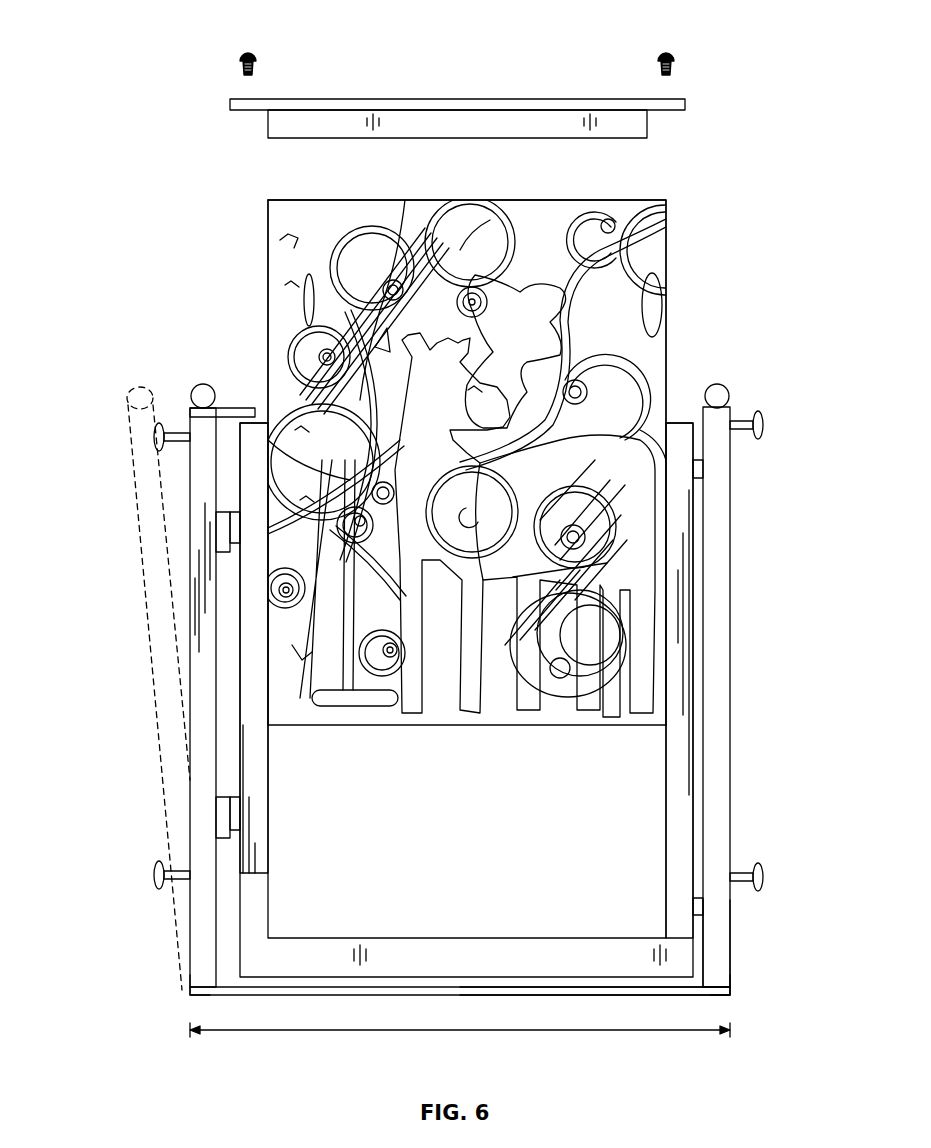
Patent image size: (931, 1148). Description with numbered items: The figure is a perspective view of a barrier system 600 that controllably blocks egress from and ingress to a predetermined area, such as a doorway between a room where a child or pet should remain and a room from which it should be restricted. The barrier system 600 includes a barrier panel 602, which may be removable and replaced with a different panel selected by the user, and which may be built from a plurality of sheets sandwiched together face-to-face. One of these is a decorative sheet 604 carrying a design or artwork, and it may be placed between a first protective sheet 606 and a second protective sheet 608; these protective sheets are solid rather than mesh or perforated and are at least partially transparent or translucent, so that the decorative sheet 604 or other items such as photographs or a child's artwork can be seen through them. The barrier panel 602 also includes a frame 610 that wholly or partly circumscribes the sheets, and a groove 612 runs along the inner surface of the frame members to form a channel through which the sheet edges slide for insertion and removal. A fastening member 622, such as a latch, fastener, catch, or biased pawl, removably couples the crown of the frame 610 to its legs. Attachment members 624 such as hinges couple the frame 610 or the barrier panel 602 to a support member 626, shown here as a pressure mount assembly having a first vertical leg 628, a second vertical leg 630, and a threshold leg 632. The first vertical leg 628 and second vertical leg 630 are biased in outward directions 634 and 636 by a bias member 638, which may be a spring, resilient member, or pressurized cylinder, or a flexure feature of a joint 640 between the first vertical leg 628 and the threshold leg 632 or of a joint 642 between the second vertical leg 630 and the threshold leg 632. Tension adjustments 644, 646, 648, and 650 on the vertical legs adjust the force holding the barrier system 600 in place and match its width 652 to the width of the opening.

The barrier system 600 is at (141, 43).
The barrier panel 602 is at (668, 348).
The decorative sheet 604 is at (668, 240).
The first protective sheet 606 is at (268, 305).
The second protective sheet 608 is at (268, 240).
The frame 610 is at (693, 765).
The groove 612 is at (630, 138).
The fastening member 622 is at (240, 99).
The attachment members 624 is at (190, 520).
The support member 626 is at (732, 530).
The first vertical leg 628 is at (190, 960).
The second vertical leg 630 is at (732, 912).
The threshold leg 632 is at (650, 997).
The outward direction 634 is at (130, 465).
The outward direction 636 is at (816, 486).
The bias member 638 is at (205, 997).
The joint 640 is at (185, 995).
The joint 642 is at (732, 985).
The tension adjustment 644 is at (182, 432).
The tension adjustment 646 is at (155, 882).
The tension adjustment 648 is at (762, 418).
The tension adjustment 650 is at (768, 877).
The width 652 is at (462, 1032).